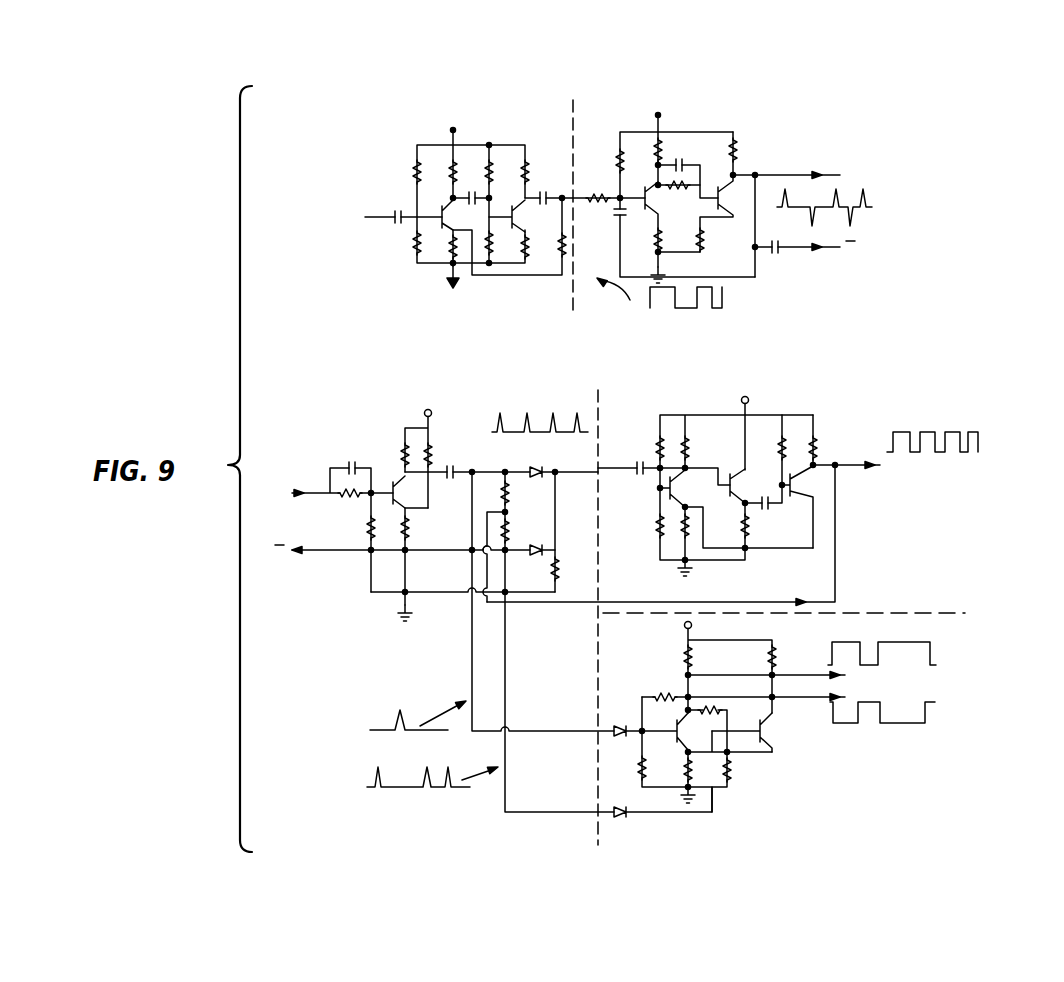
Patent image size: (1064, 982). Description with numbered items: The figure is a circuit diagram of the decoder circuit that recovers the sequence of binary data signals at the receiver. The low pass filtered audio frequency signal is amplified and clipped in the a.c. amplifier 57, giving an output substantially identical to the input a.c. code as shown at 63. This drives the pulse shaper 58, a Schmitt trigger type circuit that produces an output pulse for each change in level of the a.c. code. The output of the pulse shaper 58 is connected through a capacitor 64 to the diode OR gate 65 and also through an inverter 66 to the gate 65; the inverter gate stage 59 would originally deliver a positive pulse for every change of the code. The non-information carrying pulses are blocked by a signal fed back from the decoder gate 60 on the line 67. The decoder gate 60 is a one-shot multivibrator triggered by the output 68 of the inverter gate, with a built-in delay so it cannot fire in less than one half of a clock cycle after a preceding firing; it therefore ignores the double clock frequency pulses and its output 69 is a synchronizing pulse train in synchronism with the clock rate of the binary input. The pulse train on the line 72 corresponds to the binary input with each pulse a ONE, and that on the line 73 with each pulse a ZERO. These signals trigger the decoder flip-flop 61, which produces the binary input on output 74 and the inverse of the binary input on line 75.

The a.c. amplifier 57 is at (394, 146).
The pulse shaper 58 is at (784, 148).
The inverter gate 59 is at (363, 438).
The decoder gate 60 is at (834, 432).
The decoder flip-flop 61 is at (833, 766).
The a.c. code output 63 is at (628, 312).
The capacitor 64 is at (824, 248).
The diode OR gate 65 is at (542, 520).
The inverter 66 is at (360, 511).
The line 67 is at (838, 558).
The output of the inverter gate 68 is at (610, 468).
The decoder gate output 69 is at (984, 440).
The line 72 is at (512, 772).
The line 73 is at (506, 604).
The binary output line 74 is at (798, 673).
The line 75 is at (798, 700).